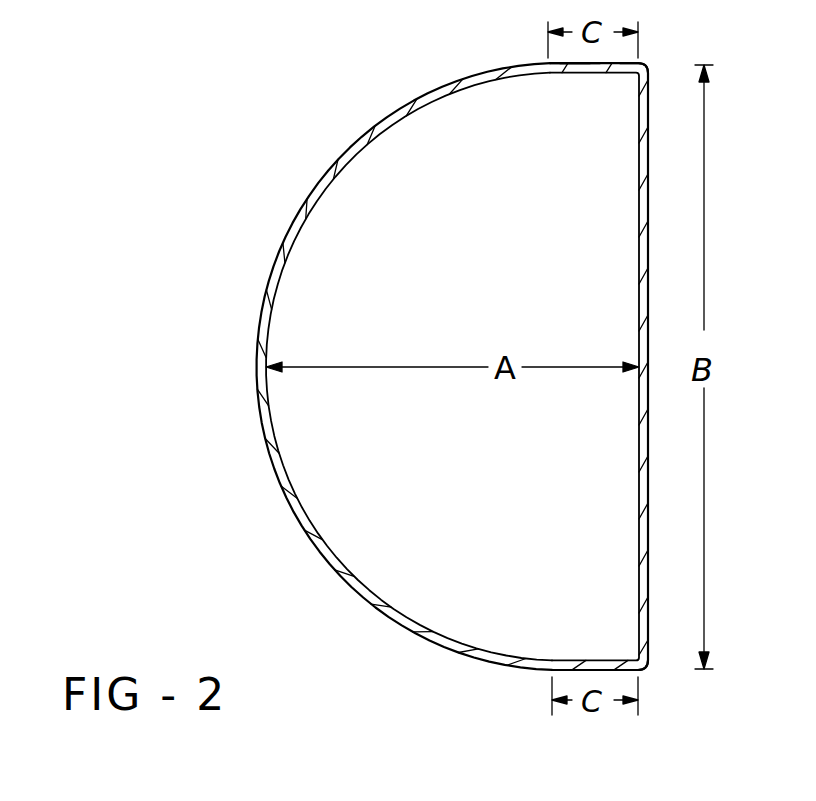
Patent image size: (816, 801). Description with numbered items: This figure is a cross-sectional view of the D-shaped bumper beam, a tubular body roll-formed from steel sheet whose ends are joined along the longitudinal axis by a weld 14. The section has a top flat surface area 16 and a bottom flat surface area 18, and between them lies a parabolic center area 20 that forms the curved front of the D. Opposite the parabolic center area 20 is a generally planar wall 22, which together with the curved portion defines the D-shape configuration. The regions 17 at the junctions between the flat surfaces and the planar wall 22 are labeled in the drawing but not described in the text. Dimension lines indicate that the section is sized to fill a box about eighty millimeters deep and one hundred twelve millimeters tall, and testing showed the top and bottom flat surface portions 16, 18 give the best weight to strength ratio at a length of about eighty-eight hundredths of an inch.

The weld 14 is at (548, 73).
The top flat surface area 16 is at (578, 73).
The corner portion 17 is at (630, 73).
The bottom flat surface area 18 is at (570, 660).
The parabolic center area 20 is at (270, 273).
The planar wall 22 is at (650, 266).